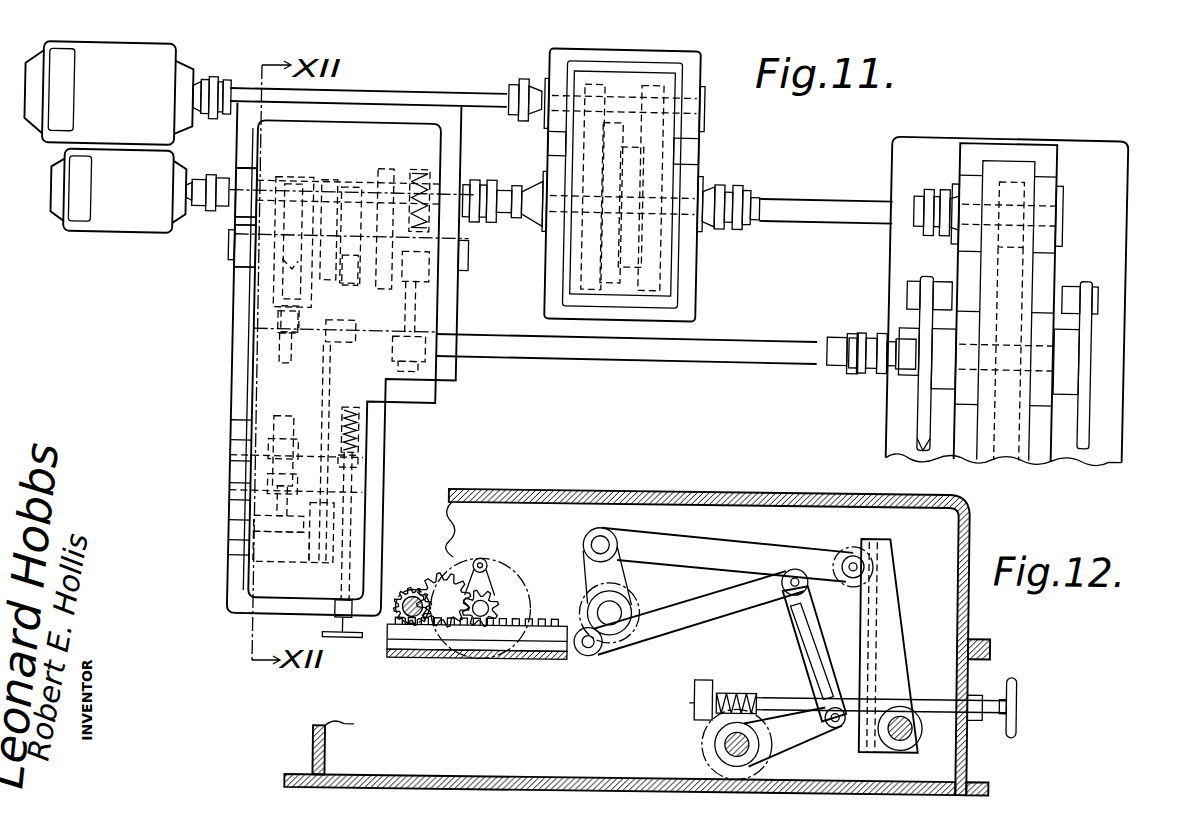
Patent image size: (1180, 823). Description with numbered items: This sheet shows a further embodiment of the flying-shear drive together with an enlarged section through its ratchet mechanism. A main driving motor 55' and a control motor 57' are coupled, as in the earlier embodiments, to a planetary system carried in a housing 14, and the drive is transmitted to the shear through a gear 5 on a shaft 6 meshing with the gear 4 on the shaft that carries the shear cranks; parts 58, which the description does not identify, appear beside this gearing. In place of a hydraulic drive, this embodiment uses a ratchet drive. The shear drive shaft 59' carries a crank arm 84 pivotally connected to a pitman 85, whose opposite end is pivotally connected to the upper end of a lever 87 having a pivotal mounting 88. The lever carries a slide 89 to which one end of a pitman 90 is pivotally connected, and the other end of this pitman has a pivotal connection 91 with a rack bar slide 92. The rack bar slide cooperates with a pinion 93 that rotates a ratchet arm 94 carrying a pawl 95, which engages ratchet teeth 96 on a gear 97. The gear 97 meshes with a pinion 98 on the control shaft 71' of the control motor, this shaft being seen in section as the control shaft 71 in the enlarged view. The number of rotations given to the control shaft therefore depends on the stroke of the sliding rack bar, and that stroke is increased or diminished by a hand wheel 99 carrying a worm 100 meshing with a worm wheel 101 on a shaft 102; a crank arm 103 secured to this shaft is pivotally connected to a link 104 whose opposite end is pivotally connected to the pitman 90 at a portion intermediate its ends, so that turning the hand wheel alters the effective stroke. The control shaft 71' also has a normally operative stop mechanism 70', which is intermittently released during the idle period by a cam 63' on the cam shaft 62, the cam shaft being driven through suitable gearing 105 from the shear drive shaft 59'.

In FIG. 11, the main driving motor 55' is at (128, 77).
In FIG. 11, the control motor 57' is at (139, 209).
In FIG. 11, the control shaft 71' is at (223, 217).
In FIG. 11, the rack bar slide 92 is at (288, 178).
In FIG. 12, the rack bar slide 92 is at (537, 628).
In FIG. 11, the ratchet arm 94 is at (322, 182).
In FIG. 12, the ratchet arm 94 is at (497, 554).
In FIG. 11, the ratchet teeth 96 is at (334, 192).
In FIG. 12, the ratchet teeth 96 is at (440, 580).
In FIG. 11, the pinion 98 is at (356, 180).
In FIG. 12, the pinion 98 is at (395, 625).
In FIG. 11, the stop mechanism 70' is at (416, 181).
In FIG. 11, the housing 14 is at (676, 126).
In FIG. 11, the gear 5 is at (1007, 178).
In FIG. 11, the shaft 6 is at (830, 210).
In FIG. 11, the lever 58 is at (912, 318).
In FIG. 11, the gear 4 is at (1018, 447).
In FIG. 11, the cam 63' is at (456, 278).
In FIG. 11, the cam shaft 62 is at (437, 318).
In FIG. 11, the gearing 105 is at (421, 341).
In FIG. 11, the shear drive shaft 59' is at (646, 362).
In FIG. 12, the shear drive shaft 59' is at (630, 605).
In FIG. 11, the pinion 93 is at (283, 272).
In FIG. 12, the pinion 93 is at (481, 622).
In FIG. 11, the gear 97 is at (352, 270).
In FIG. 12, the gear 97 is at (435, 590).
In FIG. 11, the crank arm 84 is at (350, 324).
In FIG. 12, the crank arm 84 is at (585, 566).
In FIG. 11, the pivotal connection 91 is at (283, 330).
In FIG. 12, the pivotal connection 91 is at (593, 655).
In FIG. 11, the pitman 90 is at (270, 358).
In FIG. 12, the pitman 90 is at (710, 616).
In FIG. 11, the shaft 102 is at (263, 420).
In FIG. 12, the shaft 102 is at (727, 747).
In FIG. 11, the pitman 85 is at (326, 405).
In FIG. 12, the pitman 85 is at (729, 552).
In FIG. 11, the crank arm 103 is at (280, 453).
In FIG. 12, the crank arm 103 is at (800, 740).
In FIG. 11, the link 104 is at (280, 484).
In FIG. 12, the link 104 is at (807, 635).
In FIG. 11, the slide 89 is at (262, 530).
In FIG. 12, the slide 89 is at (878, 627).
In FIG. 11, the pivotal mounting 88 is at (270, 555).
In FIG. 12, the pivotal mounting 88 is at (898, 742).
In FIG. 11, the worm 100 is at (362, 436).
In FIG. 12, the worm 100 is at (737, 693).
In FIG. 11, the worm wheel 101 is at (362, 460).
In FIG. 12, the worm wheel 101 is at (703, 738).
In FIG. 11, the lever 87 is at (338, 512).
In FIG. 12, the lever 87 is at (890, 580).
In FIG. 12, the hand wheel 99 is at (1017, 690).
In FIG. 12, the pawl 95 is at (477, 560).
In FIG. 12, the control shaft 71 is at (476, 655).